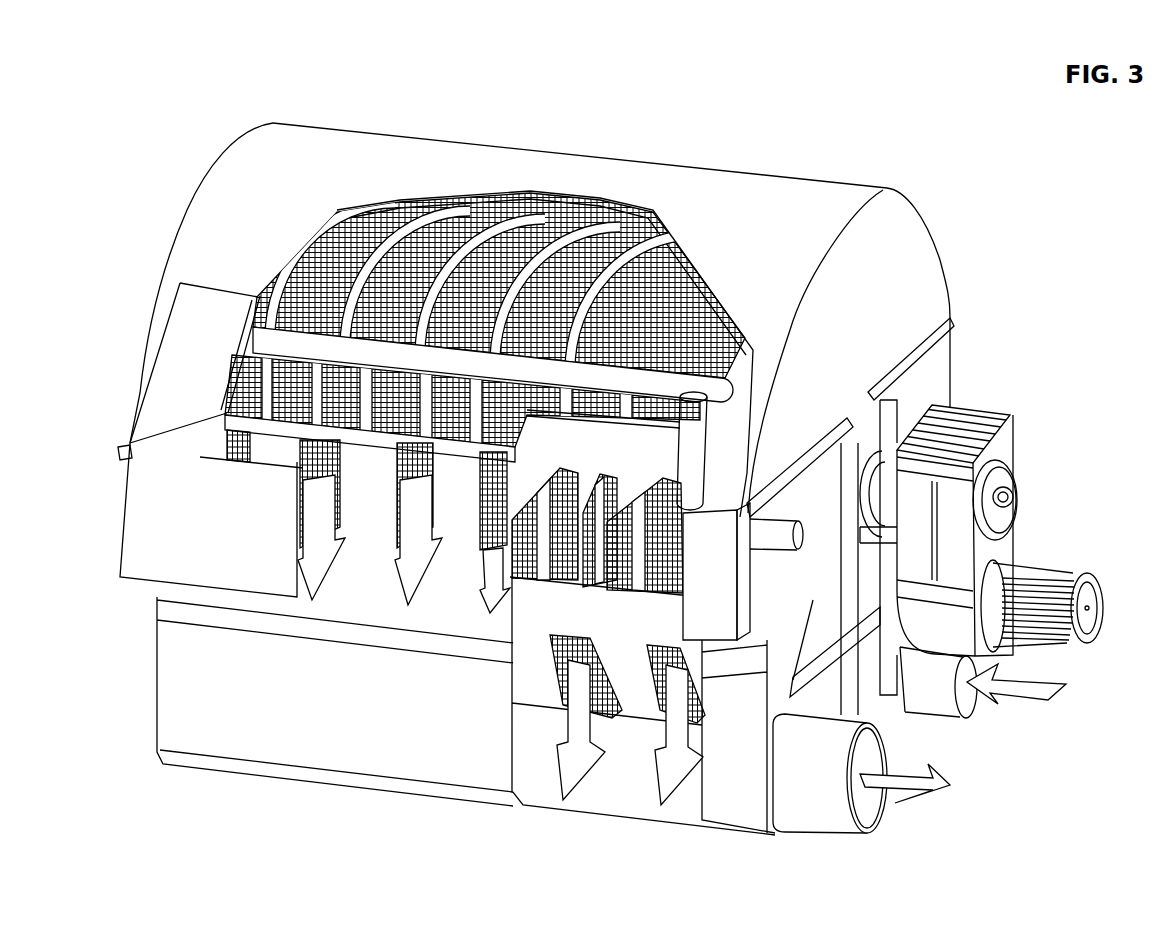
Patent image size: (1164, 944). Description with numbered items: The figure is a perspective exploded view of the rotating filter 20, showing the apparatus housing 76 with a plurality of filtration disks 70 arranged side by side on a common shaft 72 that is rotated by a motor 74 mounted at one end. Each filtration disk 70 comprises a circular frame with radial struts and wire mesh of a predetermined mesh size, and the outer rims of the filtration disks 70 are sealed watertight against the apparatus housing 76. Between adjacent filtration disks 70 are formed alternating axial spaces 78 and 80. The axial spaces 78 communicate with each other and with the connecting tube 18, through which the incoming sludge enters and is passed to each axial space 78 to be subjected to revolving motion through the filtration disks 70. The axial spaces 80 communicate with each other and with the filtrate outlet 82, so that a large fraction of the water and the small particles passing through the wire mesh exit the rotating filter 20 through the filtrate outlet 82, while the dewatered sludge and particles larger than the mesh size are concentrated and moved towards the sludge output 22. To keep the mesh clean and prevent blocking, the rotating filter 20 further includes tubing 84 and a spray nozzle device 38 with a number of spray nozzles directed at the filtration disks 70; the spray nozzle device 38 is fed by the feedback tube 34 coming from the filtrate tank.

The rotating filter 20 is at (858, 148).
The apparatus housing 76 is at (300, 240).
The filtration disks 70 is at (367, 217).
The axial spaces 80 is at (653, 257).
The tubing 84 is at (267, 333).
The spray nozzle device 38 is at (312, 398).
The sludge output 22 is at (150, 587).
The common shaft 72 is at (537, 470).
The axial spaces 78 is at (425, 440).
The feedback tube 34 is at (775, 543).
The motor 74 is at (997, 445).
The connecting tube 18 is at (968, 705).
The filtrate outlet 82 is at (863, 813).